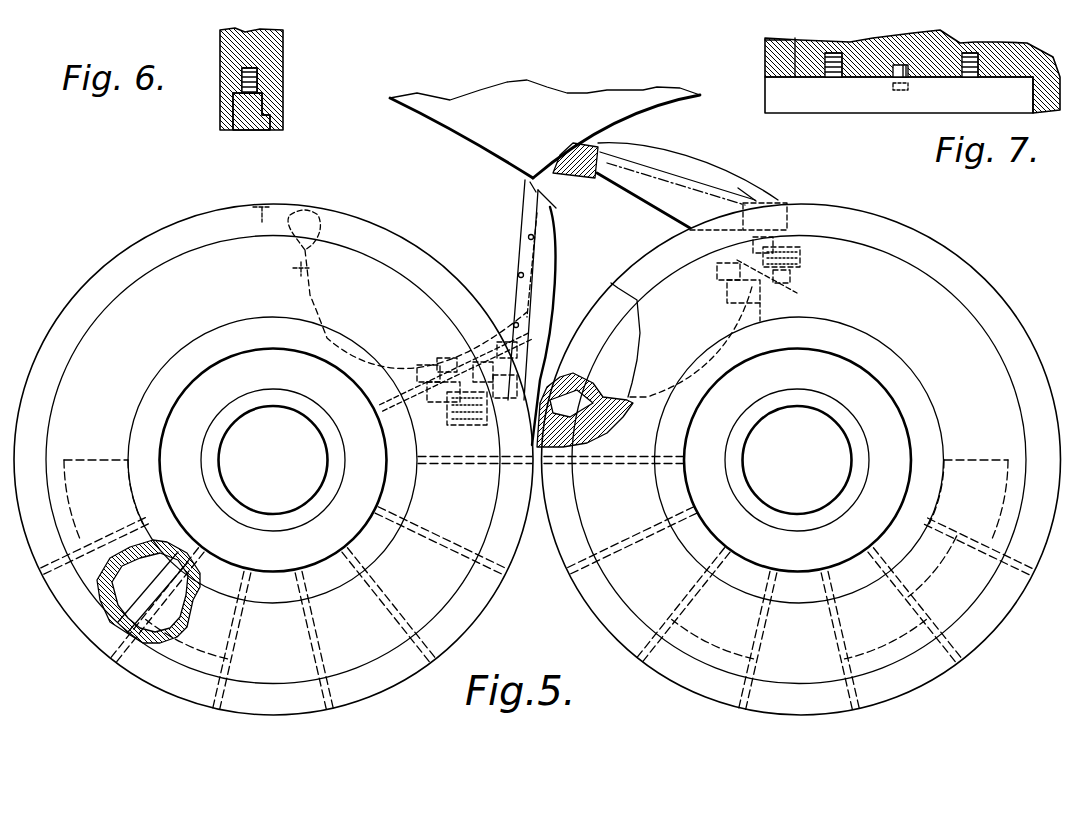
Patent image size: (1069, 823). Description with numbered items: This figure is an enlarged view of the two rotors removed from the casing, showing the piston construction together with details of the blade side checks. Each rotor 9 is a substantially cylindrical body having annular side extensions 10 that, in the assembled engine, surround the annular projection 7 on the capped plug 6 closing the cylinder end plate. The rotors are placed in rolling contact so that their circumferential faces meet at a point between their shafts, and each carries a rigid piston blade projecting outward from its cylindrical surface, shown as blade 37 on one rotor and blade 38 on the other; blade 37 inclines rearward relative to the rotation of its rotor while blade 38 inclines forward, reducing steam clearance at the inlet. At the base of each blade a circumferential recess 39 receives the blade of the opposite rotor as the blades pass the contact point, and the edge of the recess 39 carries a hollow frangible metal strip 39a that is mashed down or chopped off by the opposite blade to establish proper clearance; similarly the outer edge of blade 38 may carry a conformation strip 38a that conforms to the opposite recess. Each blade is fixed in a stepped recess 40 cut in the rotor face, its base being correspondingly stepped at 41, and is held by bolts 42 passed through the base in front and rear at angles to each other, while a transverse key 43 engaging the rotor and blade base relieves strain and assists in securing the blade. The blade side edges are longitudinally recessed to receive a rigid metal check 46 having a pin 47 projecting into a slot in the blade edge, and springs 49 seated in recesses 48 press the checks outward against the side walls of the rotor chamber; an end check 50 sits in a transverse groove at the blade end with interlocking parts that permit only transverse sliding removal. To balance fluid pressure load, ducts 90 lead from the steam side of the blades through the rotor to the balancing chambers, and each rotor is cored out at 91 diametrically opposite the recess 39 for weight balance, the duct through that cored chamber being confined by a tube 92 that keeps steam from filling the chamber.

In FIG. 5, the capped plug 6 is at (515, 237).
In FIG. 5, the annular projection 7 is at (556, 149).
In FIG. 5, the rotor 9 is at (537, 459).
In FIG. 5, the annular side extension 10 is at (152, 400).
In FIG. 5, the blade 37 is at (742, 187).
In FIG. 5, the blade 38 is at (572, 285).
In FIG. 5, the conformation strip 38a is at (523, 183).
In FIG. 5, the circumferential recess 39 is at (319, 313).
In FIG. 5, the frangible metal strip 39a is at (320, 228).
In FIG. 5, the stepped recess 40 is at (795, 303).
In FIG. 5, the stepped base of blade 41 is at (748, 214).
In FIG. 5, the bolts 42 is at (455, 350).
In FIG. 5, the transverse key 43 is at (756, 327).
In FIG. 5, the rigid metal check 46 is at (652, 173).
In FIG. 6, the rigid metal check 46 is at (256, 122).
In FIG. 7, the rigid metal check 46 is at (901, 106).
In FIG. 5, the pin 47 is at (705, 161).
In FIG. 7, the pin 47 is at (895, 80).
In FIG. 5, the recess 48 is at (630, 154).
In FIG. 6, the recess 48 is at (259, 86).
In FIG. 7, the recess 48 is at (840, 55).
In FIG. 6, the spring 49 is at (258, 71).
In FIG. 7, the spring 49 is at (832, 74).
In FIG. 5, the end check 50 is at (580, 150).
In FIG. 7, the end check 50 is at (765, 45).
In FIG. 5, the duct 90 is at (316, 643).
In FIG. 5, the cored-out chamber 91 is at (132, 592).
In FIG. 5, the tube 92 is at (146, 642).